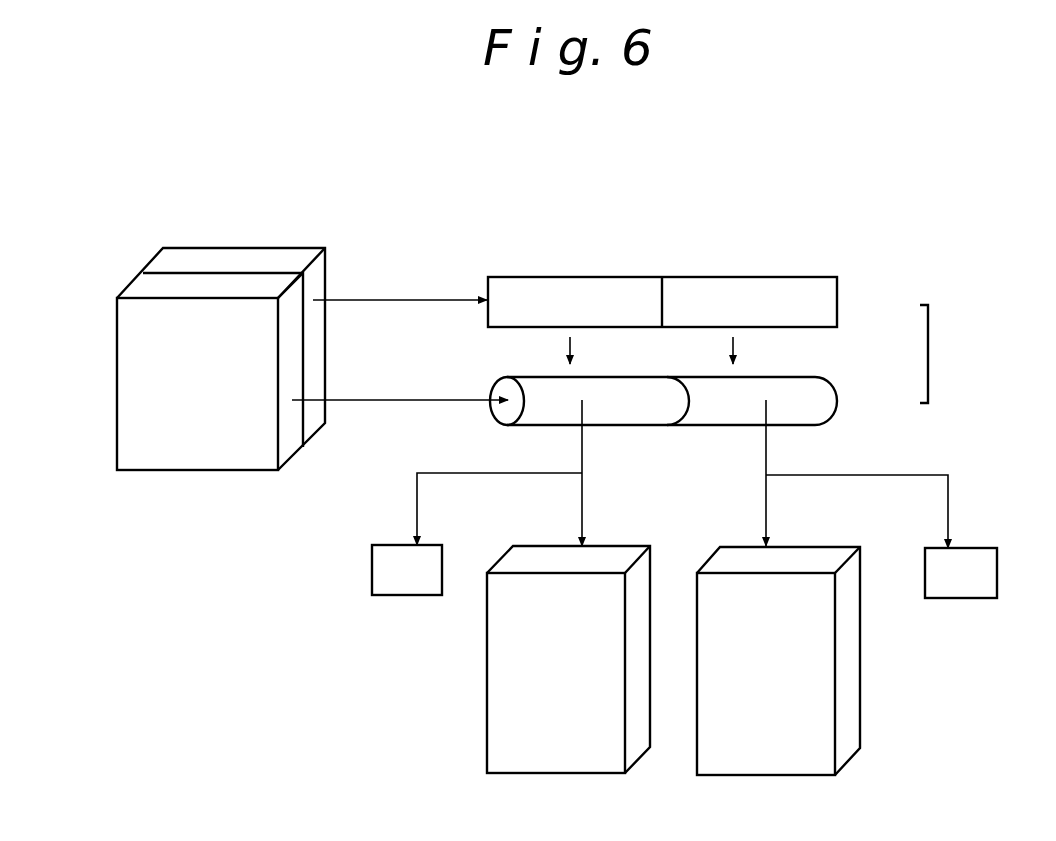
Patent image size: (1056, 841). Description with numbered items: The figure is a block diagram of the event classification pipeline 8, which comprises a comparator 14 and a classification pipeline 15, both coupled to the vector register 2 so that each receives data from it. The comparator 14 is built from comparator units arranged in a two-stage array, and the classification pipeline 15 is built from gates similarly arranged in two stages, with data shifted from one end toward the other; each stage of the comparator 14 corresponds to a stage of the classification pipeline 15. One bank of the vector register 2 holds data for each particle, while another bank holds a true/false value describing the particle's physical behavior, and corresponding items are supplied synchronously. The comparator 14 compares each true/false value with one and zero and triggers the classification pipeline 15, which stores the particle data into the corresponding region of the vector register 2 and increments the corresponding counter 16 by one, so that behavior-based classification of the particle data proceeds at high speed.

The vector register 2 is at (165, 472).
The comparator 14 is at (782, 277).
The classification pipeline 15 is at (803, 377).
The counter 16 is at (372, 578).
The event classification pipeline 8 is at (928, 358).